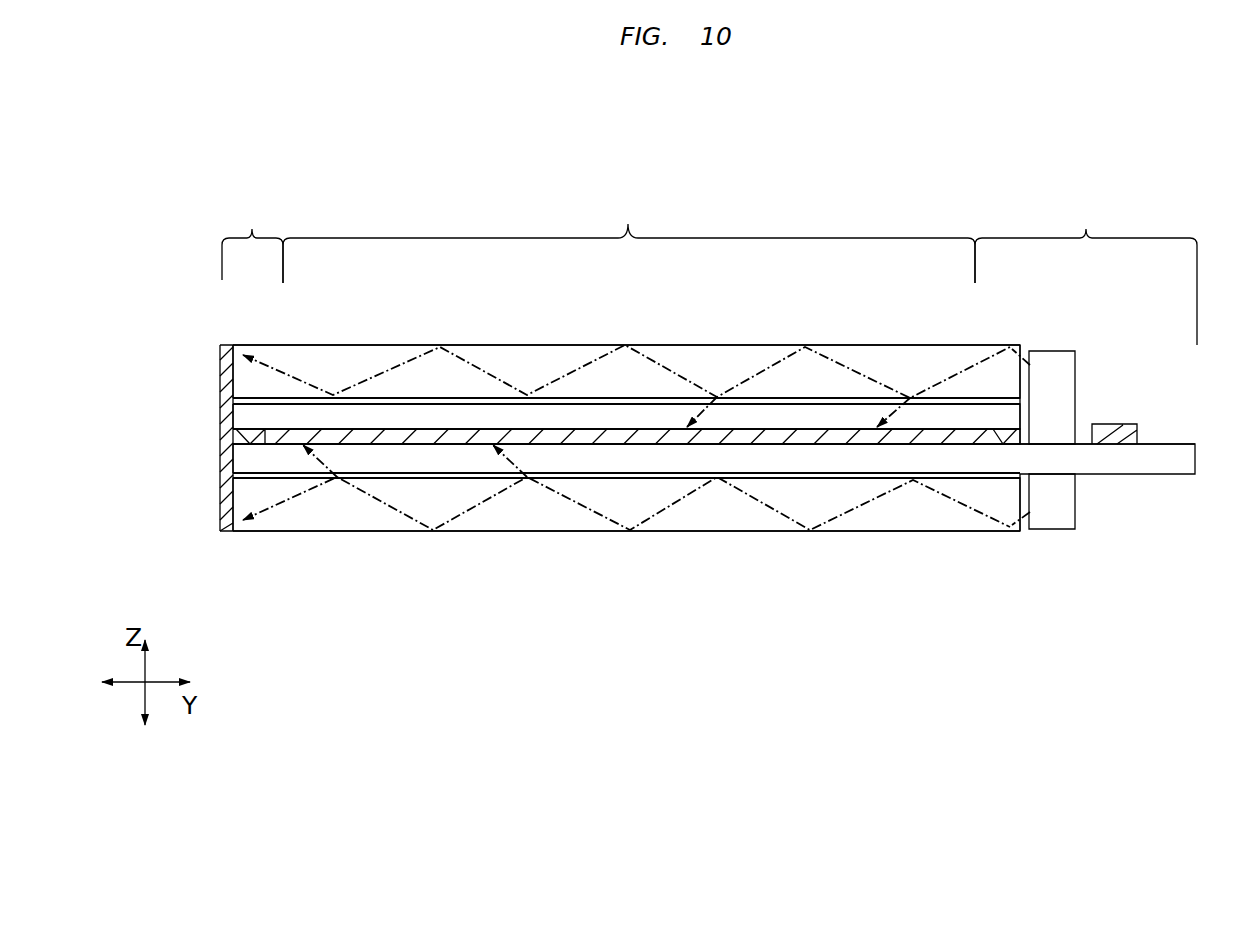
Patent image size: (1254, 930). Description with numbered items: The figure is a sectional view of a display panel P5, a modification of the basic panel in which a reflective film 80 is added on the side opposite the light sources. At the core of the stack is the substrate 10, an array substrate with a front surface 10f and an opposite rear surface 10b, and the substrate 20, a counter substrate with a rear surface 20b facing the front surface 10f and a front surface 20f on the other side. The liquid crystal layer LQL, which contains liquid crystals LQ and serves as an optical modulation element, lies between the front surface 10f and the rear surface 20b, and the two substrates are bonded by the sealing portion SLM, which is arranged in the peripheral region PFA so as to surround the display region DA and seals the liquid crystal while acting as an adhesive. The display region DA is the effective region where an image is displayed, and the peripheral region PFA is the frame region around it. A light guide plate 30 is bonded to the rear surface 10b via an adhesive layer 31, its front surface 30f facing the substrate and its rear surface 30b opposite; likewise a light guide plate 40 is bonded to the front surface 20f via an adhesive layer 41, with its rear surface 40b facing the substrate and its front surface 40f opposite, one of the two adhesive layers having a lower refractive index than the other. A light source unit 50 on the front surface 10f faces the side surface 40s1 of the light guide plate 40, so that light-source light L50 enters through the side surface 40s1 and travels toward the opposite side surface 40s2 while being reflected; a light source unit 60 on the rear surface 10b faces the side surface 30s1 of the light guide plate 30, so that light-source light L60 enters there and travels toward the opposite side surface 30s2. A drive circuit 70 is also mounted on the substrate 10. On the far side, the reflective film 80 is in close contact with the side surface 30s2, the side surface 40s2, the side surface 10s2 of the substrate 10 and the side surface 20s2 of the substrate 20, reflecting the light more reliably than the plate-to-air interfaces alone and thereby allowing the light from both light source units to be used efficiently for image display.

The substrate 10 is at (628, 463).
The front surface of substrate 10 10f is at (557, 443).
The rear surface of substrate 10 10b is at (832, 478).
The side surface of substrate 10 10s2 is at (232, 460).
The substrate 20 is at (815, 408).
The front surface of substrate 20 20f is at (437, 396).
The rear surface of substrate 20 20b is at (666, 431).
The side surface of substrate 20 20s2 is at (232, 417).
The light guide plate 30 is at (304, 533).
The front surface of light guide plate 30 30f is at (766, 474).
The rear surface of light guide plate 30 30b is at (499, 535).
The side surface of light guide plate 30 30s1 is at (1025, 506).
The side surface of light guide plate 30 30s2 is at (231, 513).
The adhesive layer 31 is at (693, 478).
The light guide plate 40 is at (300, 344).
The front surface of light guide plate 40 40f is at (522, 343).
The rear surface of light guide plate 40 40b is at (393, 401).
The side surface of light guide plate 40 40s1 is at (1023, 390).
The side surface of light guide plate 40 40s2 is at (231, 358).
The adhesive layer 41 is at (759, 400).
The light source unit 50 is at (1068, 379).
The light source unit 60 is at (1063, 498).
The drive circuit 70 is at (1120, 431).
The reflective film 80 is at (228, 532).
The light-source light L50 is at (883, 386).
The light-source light L60 is at (865, 504).
The liquid crystal layer LQL is at (627, 512).
The liquid crystals LQ is at (427, 437).
The sealing portion SLM is at (1004, 432).
The display panel P5 is at (447, 209).
The display region DA is at (629, 239).
The peripheral region PFA is at (709, 272).